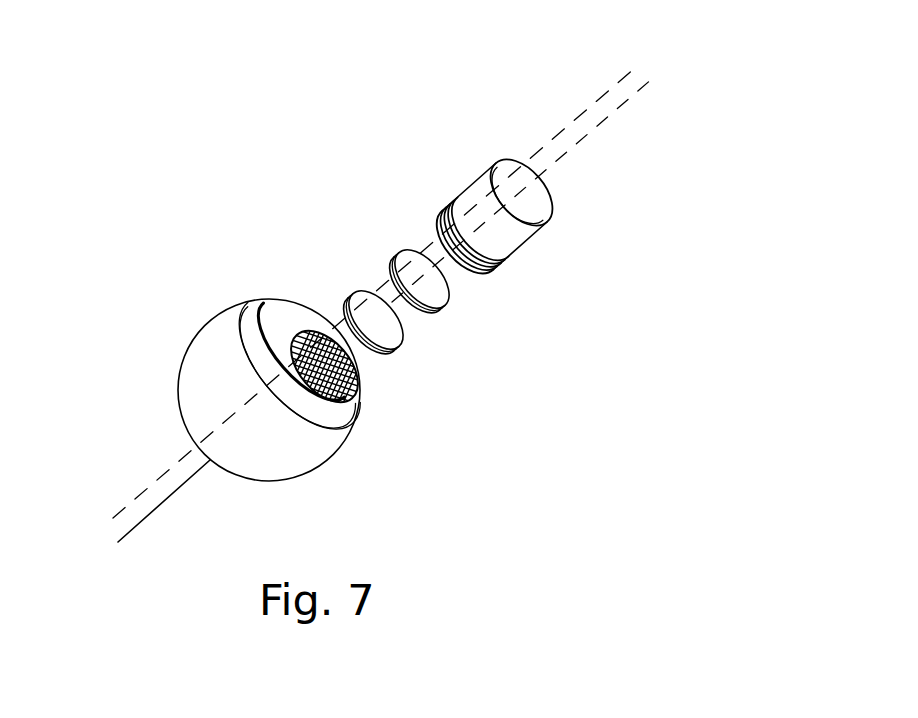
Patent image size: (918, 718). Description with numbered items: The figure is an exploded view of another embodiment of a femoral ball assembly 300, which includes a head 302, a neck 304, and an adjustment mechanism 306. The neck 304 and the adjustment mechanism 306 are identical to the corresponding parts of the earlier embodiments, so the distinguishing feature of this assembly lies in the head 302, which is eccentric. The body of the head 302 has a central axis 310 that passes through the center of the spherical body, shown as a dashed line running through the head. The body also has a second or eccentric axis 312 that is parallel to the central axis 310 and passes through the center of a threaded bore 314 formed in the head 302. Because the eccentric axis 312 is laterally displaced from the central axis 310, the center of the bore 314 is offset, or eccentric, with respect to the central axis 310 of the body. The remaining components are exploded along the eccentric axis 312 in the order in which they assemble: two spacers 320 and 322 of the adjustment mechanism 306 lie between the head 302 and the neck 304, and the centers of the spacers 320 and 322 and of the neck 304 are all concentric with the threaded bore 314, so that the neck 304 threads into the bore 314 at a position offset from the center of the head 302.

The femoral ball assembly 300 is at (136, 186).
The head 302 is at (192, 323).
The neck 304 is at (459, 166).
The adjustment mechanism 306 is at (351, 224).
The central axis 310 is at (582, 107).
The eccentric axis 312 is at (593, 137).
The threaded bore 314 is at (353, 391).
The spacer 320 is at (391, 328).
The spacer 322 is at (441, 290).